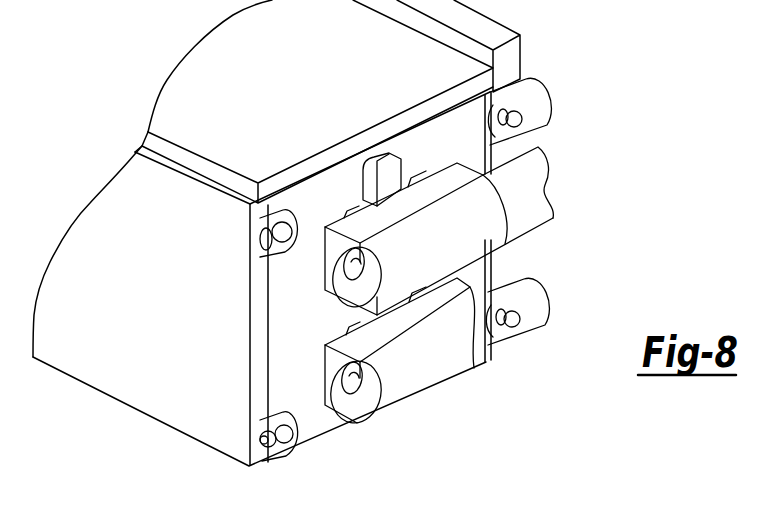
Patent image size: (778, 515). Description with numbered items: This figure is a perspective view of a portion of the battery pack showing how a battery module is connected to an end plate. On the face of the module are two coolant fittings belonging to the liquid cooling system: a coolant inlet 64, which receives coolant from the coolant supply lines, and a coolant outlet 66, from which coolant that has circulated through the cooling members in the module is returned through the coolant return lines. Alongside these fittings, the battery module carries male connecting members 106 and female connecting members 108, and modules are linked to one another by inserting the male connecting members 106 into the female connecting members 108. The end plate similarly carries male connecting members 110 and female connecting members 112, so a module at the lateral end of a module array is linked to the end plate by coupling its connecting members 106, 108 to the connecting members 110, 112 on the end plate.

The coolant inlet 64 is at (435, 368).
The coolant outlet 66 is at (477, 236).
The male connecting member 106 is at (514, 136).
The female connecting member 108 is at (291, 245).
The male connecting member 110 is at (540, 303).
The female connecting member 112 is at (540, 108).